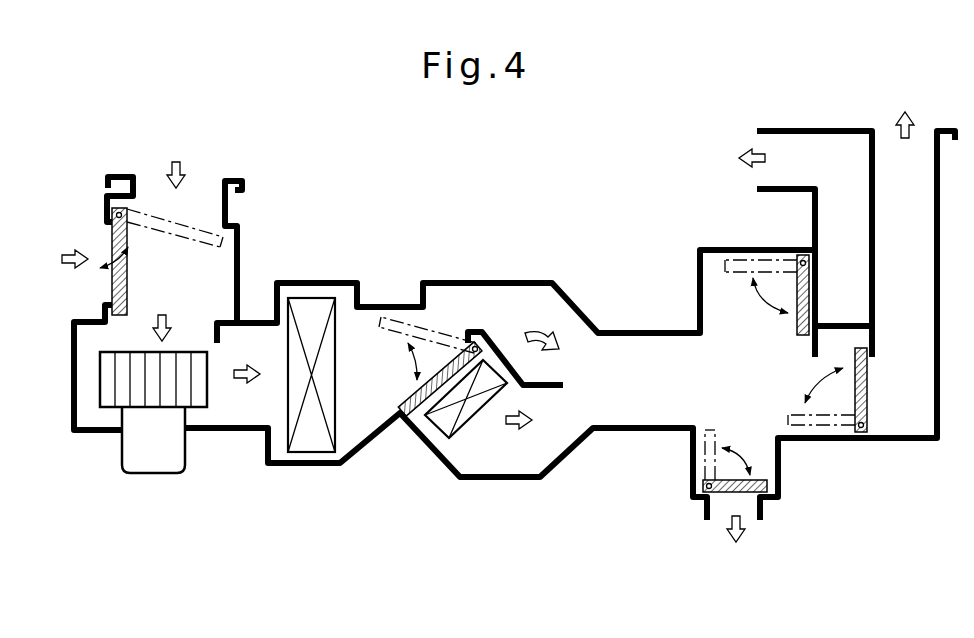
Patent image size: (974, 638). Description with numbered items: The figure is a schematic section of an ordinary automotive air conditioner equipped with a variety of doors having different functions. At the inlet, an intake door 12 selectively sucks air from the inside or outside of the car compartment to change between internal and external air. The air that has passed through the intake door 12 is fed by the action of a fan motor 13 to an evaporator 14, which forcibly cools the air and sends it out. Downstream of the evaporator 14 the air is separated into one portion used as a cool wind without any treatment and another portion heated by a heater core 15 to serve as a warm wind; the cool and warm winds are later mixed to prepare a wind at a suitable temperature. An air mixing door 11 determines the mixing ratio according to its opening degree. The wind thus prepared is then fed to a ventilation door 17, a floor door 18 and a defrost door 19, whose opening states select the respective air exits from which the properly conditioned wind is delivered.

The air mixing door 11 is at (404, 404).
The intake door 12 is at (110, 243).
The fan motor 13 is at (124, 445).
The evaporator 14 is at (315, 443).
The heater core 15 is at (458, 426).
The ventilation door 17 is at (812, 307).
The floor door 18 is at (750, 477).
The defrost door 19 is at (870, 390).